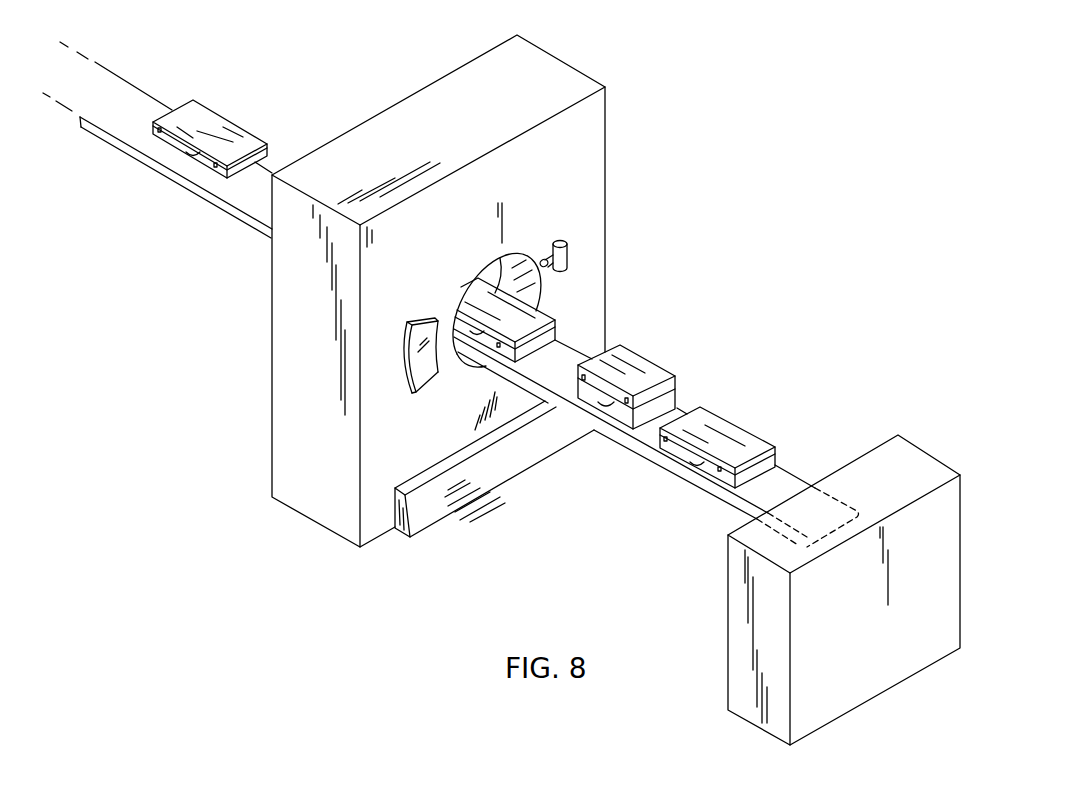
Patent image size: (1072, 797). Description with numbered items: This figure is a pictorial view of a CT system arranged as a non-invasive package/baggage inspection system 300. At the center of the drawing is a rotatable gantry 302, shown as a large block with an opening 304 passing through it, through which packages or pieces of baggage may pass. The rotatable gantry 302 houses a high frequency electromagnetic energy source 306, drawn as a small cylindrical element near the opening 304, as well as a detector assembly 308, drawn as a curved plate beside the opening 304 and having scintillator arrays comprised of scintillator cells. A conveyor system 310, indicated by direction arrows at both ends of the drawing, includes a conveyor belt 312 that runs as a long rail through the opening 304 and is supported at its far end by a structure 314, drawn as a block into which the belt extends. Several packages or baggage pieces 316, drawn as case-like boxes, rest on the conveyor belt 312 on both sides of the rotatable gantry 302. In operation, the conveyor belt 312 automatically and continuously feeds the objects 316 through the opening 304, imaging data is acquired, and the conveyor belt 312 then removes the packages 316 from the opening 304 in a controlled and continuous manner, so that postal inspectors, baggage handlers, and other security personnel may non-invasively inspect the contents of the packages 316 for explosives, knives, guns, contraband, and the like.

The package/baggage inspection system 300 is at (843, 313).
The rotatable gantry 302 is at (570, 180).
The opening 304 is at (532, 297).
The high frequency electromagnetic energy source 306 is at (567, 254).
The detector assembly 308 is at (420, 330).
The conveyor system 310 is at (86, 164).
The conveyor belt 312 is at (248, 197).
The structure 314 is at (962, 533).
The packages or baggage pieces 316 is at (210, 128).